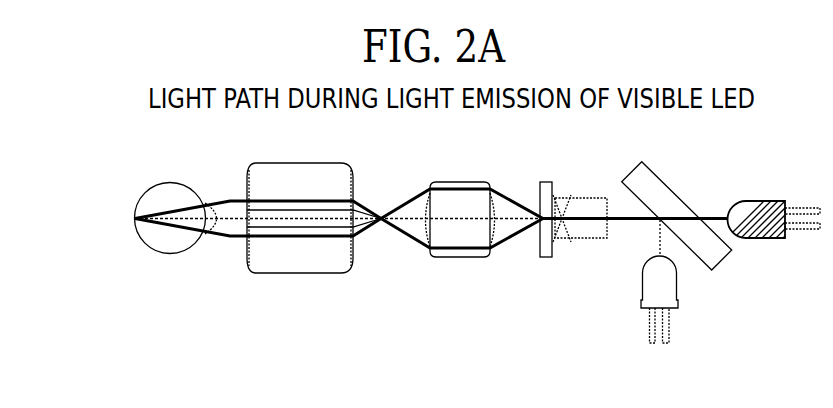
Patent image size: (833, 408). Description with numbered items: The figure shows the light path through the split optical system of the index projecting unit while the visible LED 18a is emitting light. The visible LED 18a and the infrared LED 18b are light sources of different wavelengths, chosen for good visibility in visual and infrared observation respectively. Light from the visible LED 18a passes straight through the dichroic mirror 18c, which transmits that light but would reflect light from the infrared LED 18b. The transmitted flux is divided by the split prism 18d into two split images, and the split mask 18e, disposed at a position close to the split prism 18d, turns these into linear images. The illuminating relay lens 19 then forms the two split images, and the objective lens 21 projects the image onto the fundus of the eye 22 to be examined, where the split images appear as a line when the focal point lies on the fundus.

The eye to be examined 22 is at (172, 254).
The objective lens 21 is at (295, 273).
The illuminating relay lens 19 is at (462, 257).
The split mask 18e is at (547, 257).
The split prism 18d is at (592, 238).
The dichroic mirror 18c is at (712, 268).
The infrared LED 18b is at (640, 287).
The visible LED 18a is at (768, 238).